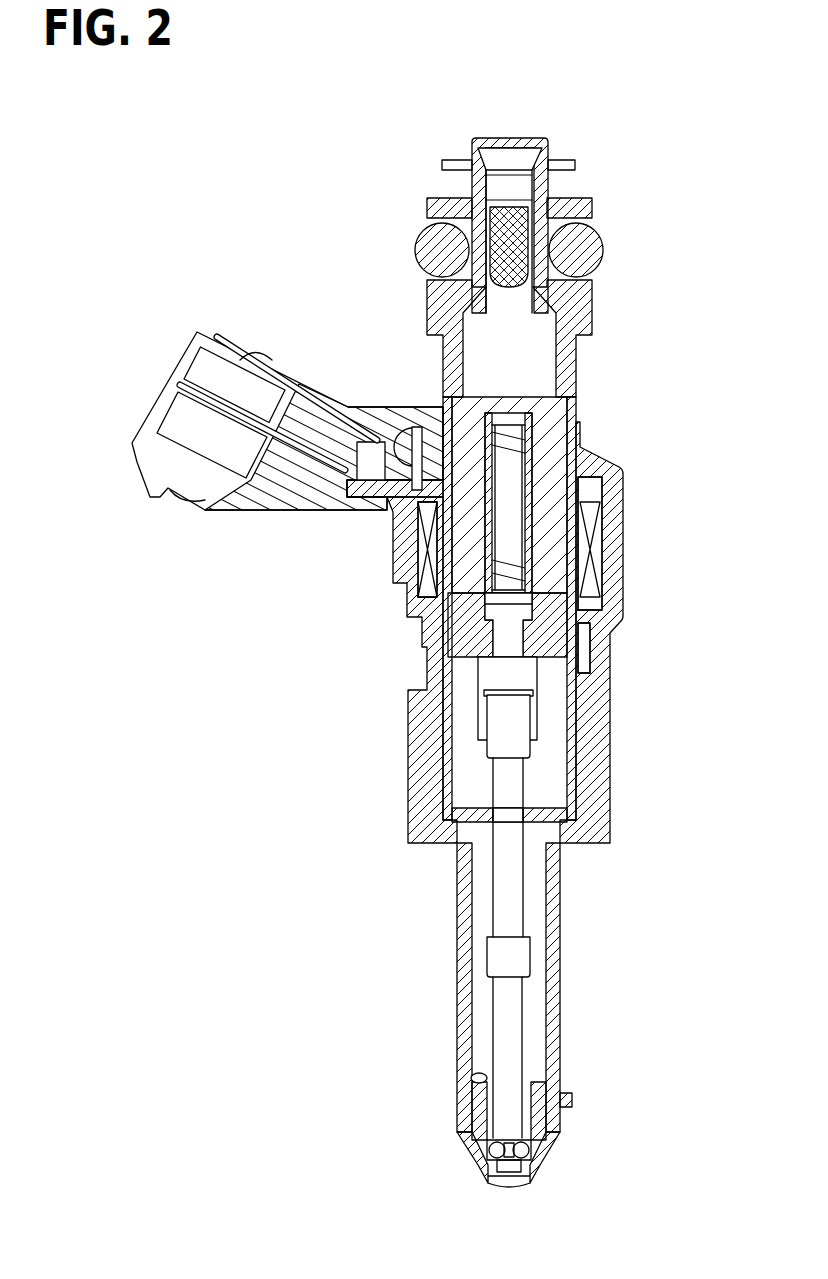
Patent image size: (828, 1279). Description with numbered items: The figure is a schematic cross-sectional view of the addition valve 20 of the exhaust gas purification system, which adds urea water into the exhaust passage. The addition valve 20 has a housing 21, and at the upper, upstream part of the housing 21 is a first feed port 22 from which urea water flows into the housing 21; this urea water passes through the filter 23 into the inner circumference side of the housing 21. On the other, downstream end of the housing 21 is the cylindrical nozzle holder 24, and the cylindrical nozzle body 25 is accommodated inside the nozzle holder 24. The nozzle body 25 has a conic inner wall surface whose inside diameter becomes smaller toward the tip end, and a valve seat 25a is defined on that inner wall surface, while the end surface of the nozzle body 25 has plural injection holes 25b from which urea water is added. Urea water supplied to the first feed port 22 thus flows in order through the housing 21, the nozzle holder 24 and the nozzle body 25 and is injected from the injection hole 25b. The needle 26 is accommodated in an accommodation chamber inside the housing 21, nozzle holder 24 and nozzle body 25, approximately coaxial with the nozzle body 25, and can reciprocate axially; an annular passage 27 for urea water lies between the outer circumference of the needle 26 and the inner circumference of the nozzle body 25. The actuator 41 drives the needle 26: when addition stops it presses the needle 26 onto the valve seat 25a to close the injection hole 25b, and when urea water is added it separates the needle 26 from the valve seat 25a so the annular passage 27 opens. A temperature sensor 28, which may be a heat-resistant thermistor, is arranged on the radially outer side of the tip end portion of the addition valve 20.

The addition valve 20 is at (597, 146).
The housing 21 is at (605, 398).
The first feed port 22 is at (490, 138).
The filter 23 is at (527, 258).
The nozzle holder 24 is at (560, 937).
The nozzle body 25 is at (468, 1113).
The valve seat 25a is at (492, 1172).
The injection hole 25b is at (508, 1187).
The needle 26 is at (493, 927).
The annular passage 27 is at (457, 1090).
The temperature sensor 28 is at (573, 1100).
The actuator 41 is at (650, 562).